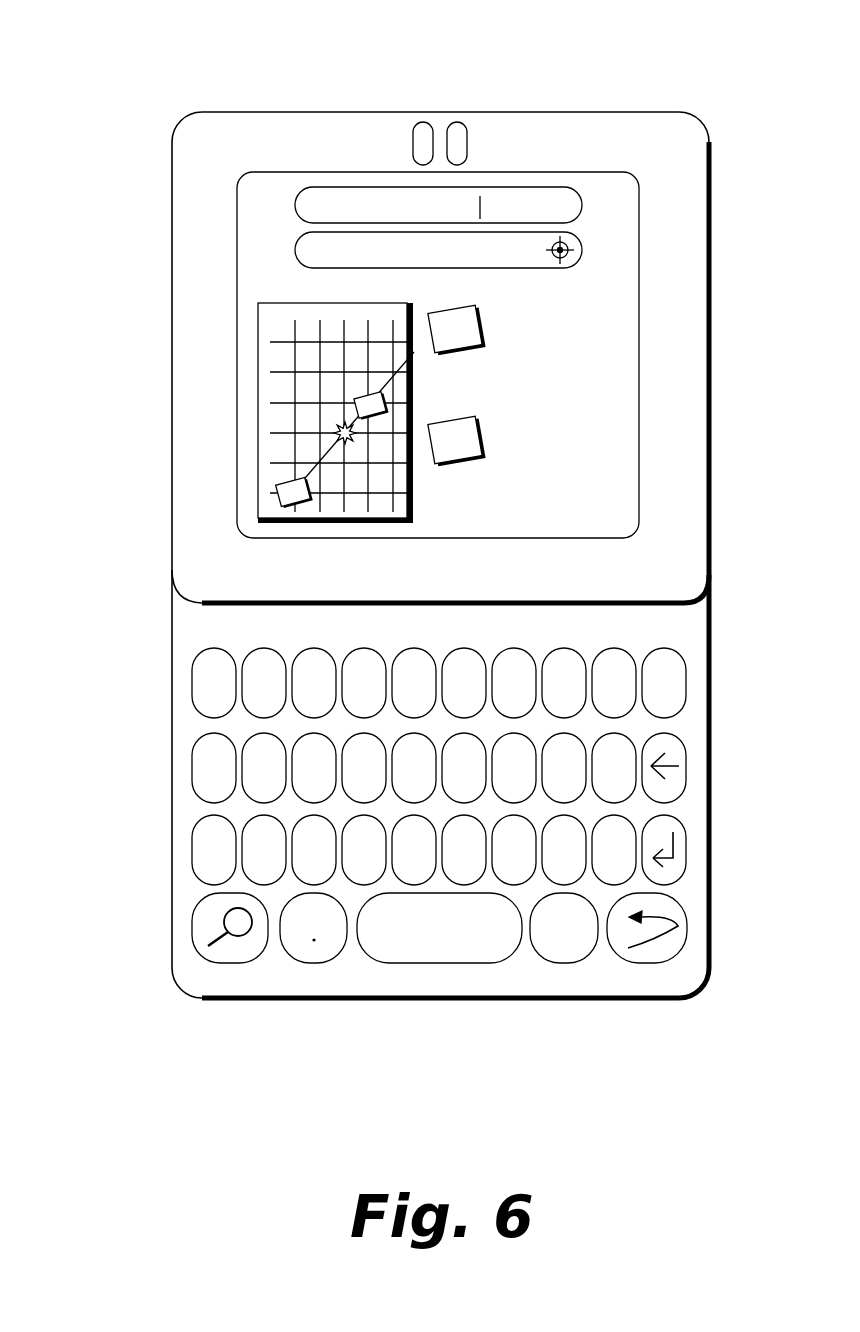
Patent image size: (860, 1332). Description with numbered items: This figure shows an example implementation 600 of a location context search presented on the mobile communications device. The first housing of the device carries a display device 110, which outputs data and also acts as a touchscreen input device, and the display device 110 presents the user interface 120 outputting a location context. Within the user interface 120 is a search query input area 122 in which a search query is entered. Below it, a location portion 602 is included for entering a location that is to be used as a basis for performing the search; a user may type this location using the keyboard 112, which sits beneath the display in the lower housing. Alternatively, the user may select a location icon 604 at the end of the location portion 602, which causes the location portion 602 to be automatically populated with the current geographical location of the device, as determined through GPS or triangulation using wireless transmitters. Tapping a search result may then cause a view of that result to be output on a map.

The mobile communication device 600 is at (162, 80).
The display device 110 is at (468, 172).
The keyboard 112 is at (188, 637).
The user interface 120 is at (631, 204).
The search query input area 122 is at (352, 186).
The location portion 602 is at (297, 247).
The location icon 604 is at (572, 245).